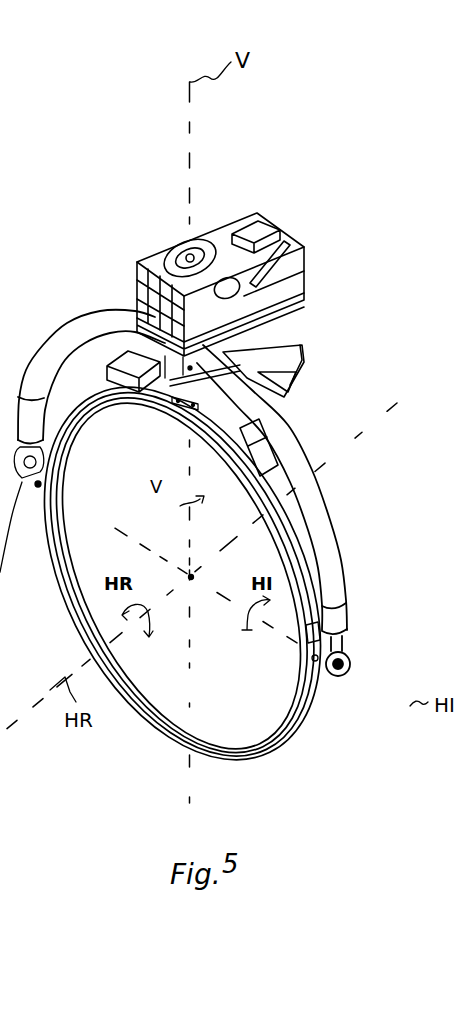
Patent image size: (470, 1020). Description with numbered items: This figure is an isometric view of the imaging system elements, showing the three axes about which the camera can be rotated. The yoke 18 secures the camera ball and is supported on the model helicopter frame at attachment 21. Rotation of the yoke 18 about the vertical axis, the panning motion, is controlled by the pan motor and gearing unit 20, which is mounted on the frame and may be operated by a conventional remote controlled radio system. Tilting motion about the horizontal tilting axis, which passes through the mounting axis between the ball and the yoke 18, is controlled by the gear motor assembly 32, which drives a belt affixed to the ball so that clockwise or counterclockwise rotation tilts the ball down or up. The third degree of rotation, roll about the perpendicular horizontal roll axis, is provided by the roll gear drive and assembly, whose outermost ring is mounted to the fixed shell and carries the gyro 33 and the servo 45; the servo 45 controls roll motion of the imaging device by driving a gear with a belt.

The yoke 18 is at (325, 530).
The pan motor and gearing unit 20 is at (245, 227).
The attachment 21 is at (210, 207).
The gear motor assembly 32 is at (298, 345).
The gyro 33 is at (125, 372).
The servo 45 is at (350, 440).